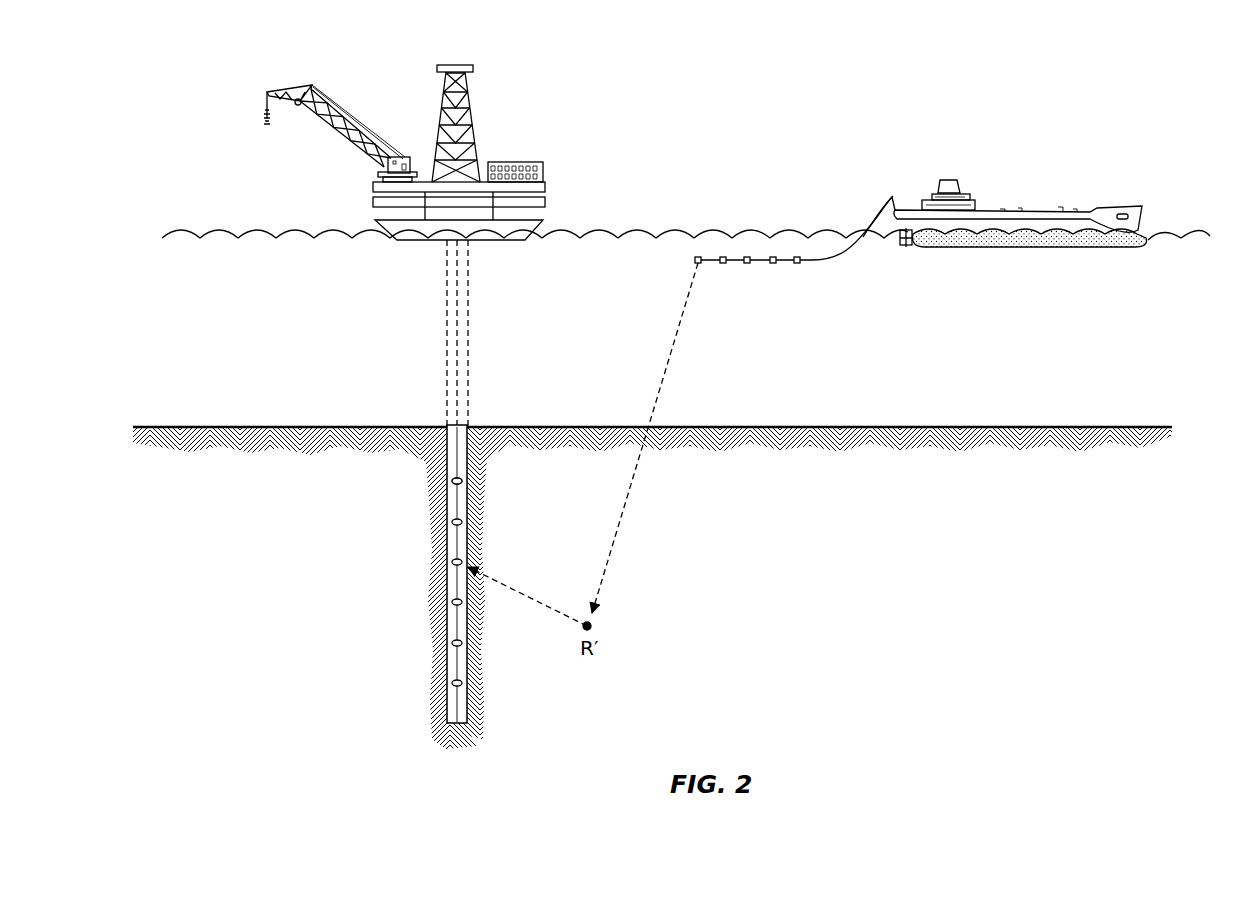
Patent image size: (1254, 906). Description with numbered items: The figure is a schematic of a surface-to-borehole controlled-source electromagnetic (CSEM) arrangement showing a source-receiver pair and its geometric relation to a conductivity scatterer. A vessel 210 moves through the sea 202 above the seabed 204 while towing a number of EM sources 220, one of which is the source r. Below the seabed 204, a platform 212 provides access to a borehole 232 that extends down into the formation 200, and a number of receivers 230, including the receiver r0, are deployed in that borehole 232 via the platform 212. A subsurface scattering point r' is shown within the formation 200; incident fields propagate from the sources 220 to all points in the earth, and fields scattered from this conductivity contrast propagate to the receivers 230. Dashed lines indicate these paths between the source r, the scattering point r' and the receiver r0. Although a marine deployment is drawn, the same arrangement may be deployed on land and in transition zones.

The formation 200 is at (724, 525).
The sea 202 is at (586, 340).
The seabed 204 is at (848, 427).
The vessel 210 is at (1008, 171).
The platform 212 is at (506, 127).
The EM sources 220 is at (803, 223).
The receivers 230 is at (425, 470).
The borehole 232 is at (468, 468).